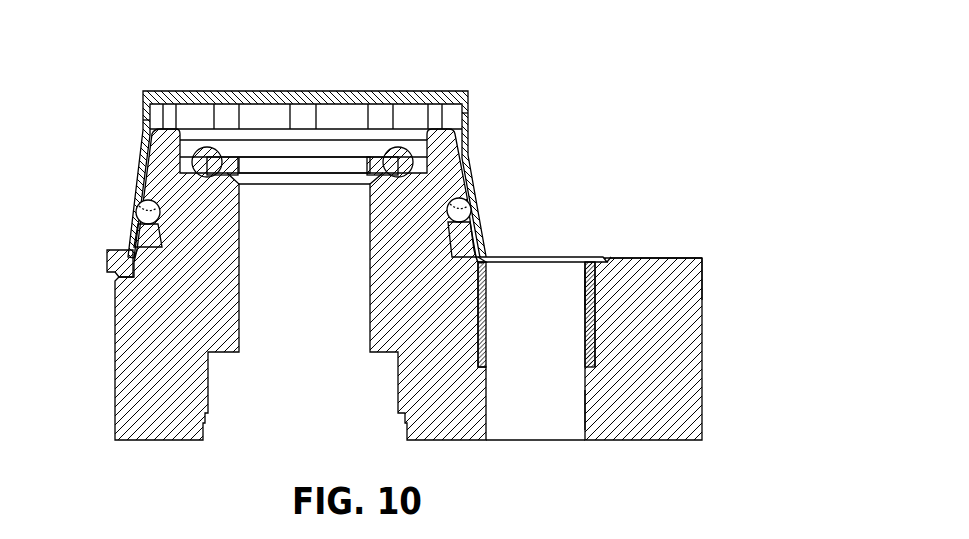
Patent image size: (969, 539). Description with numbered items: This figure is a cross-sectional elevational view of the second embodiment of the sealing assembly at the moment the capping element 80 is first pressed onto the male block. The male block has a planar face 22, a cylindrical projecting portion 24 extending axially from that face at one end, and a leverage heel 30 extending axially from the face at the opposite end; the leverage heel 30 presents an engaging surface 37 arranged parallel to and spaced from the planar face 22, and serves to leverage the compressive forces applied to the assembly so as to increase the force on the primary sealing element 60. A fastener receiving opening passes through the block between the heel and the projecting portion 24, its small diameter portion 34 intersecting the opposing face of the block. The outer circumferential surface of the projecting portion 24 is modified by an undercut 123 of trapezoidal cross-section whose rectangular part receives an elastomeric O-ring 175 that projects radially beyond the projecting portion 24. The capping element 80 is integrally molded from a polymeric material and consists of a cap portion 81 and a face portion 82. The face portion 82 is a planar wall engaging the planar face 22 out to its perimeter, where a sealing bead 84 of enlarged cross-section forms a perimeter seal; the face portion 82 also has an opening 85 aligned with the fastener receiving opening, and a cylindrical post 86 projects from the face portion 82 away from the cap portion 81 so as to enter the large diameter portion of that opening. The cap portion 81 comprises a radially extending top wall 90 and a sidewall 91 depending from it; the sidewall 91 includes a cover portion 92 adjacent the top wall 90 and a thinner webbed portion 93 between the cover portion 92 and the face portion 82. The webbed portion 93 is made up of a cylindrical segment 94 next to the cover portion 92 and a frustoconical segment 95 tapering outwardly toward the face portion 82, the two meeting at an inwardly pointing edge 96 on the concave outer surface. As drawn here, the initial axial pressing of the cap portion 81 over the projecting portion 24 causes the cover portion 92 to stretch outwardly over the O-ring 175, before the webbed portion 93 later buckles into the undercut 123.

The planar face 22 is at (622, 260).
The projecting portion 24 is at (470, 162).
The leverage heel 30 is at (690, 258).
The small diameter portion 34 is at (585, 408).
The engaging surface 37 is at (670, 258).
The primary sealing element 60 is at (305, 178).
The capping element 80 is at (296, 135).
The cap portion 81 is at (135, 85).
The face portion 82 is at (630, 262).
The sealing bead 84 is at (108, 260).
The opening 85 is at (585, 290).
The cylindrical post 86 is at (592, 300).
The top wall 90 is at (302, 90).
The sidewall 91 is at (140, 119).
The cover portion 92 is at (471, 113).
The webbed portion 93 is at (147, 212).
The cylindrical segment 94 is at (470, 205).
The frustoconical segment 95 is at (465, 233).
The inwardly pointing edge 96 is at (140, 238).
The undercut 123 is at (478, 242).
The O-ring 175 is at (128, 224).